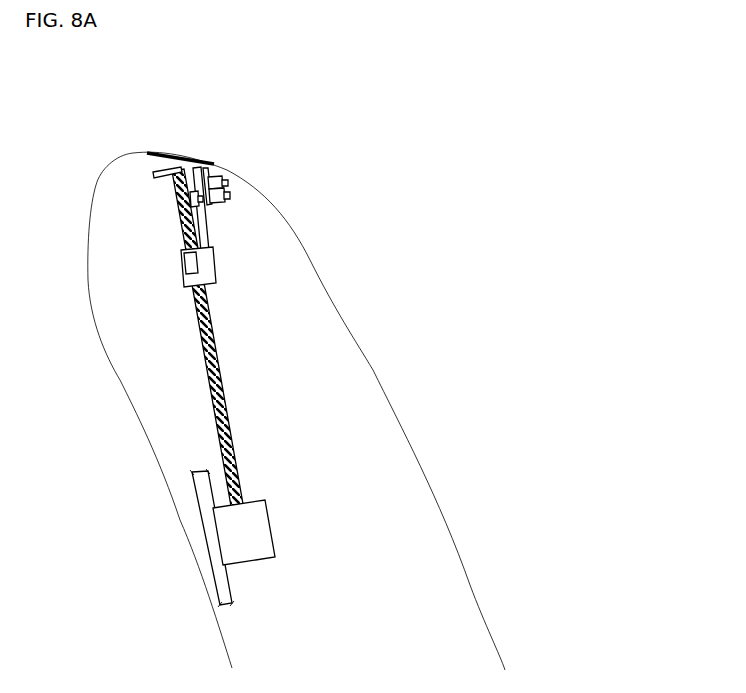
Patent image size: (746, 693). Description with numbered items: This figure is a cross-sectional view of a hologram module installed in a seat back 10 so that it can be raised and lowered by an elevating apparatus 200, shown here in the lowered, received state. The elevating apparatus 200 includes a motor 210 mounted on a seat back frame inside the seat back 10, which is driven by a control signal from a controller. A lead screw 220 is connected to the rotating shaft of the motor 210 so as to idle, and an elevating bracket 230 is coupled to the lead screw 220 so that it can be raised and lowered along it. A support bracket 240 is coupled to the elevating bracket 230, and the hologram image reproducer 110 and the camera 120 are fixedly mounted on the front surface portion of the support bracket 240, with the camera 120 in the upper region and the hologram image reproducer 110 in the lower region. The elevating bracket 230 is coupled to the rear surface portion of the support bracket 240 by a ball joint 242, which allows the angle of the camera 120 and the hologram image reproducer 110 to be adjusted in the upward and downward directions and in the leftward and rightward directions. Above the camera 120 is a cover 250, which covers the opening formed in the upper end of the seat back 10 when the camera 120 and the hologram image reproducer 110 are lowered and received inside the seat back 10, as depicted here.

The seat back 10 is at (373, 370).
The hologram image reproducer 110 is at (228, 193).
The camera 120 is at (225, 178).
The elevating apparatus 200 is at (268, 339).
The motor 210 is at (277, 512).
The lead screw 220 is at (217, 415).
The elevating bracket 230 is at (181, 275).
The support bracket 240 is at (205, 162).
The ball joint 242 is at (207, 210).
The cover 250 is at (163, 153).